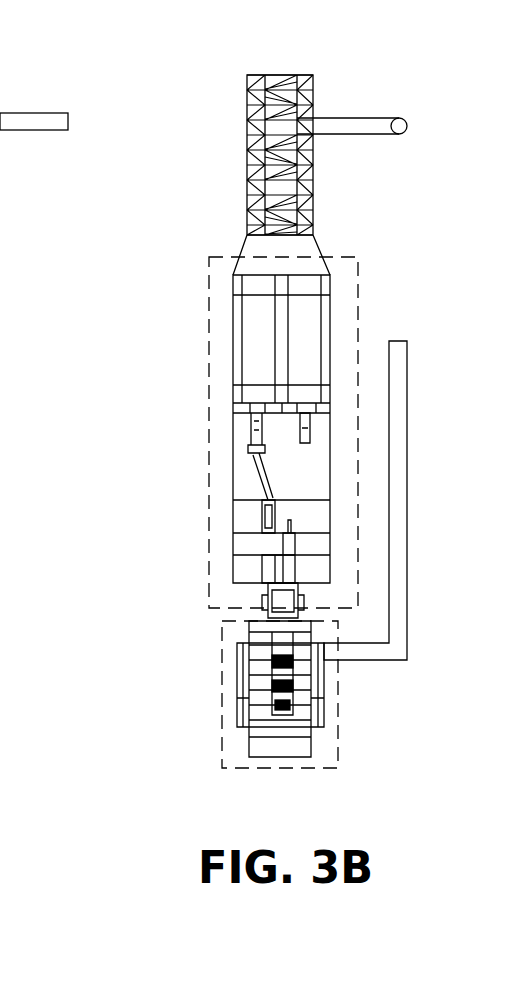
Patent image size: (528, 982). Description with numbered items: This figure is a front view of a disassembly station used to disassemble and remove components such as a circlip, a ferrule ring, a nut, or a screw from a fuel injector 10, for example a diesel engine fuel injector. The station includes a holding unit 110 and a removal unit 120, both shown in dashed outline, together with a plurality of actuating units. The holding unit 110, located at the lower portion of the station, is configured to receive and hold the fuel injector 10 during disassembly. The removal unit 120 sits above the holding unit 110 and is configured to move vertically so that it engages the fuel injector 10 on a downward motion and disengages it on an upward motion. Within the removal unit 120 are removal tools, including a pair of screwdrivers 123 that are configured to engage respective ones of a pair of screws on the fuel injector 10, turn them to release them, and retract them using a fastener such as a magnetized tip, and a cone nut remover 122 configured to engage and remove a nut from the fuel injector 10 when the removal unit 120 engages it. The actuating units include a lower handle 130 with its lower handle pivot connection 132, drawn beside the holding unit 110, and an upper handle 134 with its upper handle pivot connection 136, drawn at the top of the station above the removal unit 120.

The fuel injector 10 is at (268, 643).
The holding unit 110 is at (220, 723).
The removal unit 120 is at (205, 385).
The cone nut remover 122 is at (270, 583).
The screwdriver 123 is at (250, 440).
The lower handle 130 is at (400, 415).
The lower handle pivot connection 132 is at (324, 685).
The upper handle 134 is at (332, 127).
The upper handle pivot connection 136 is at (313, 175).